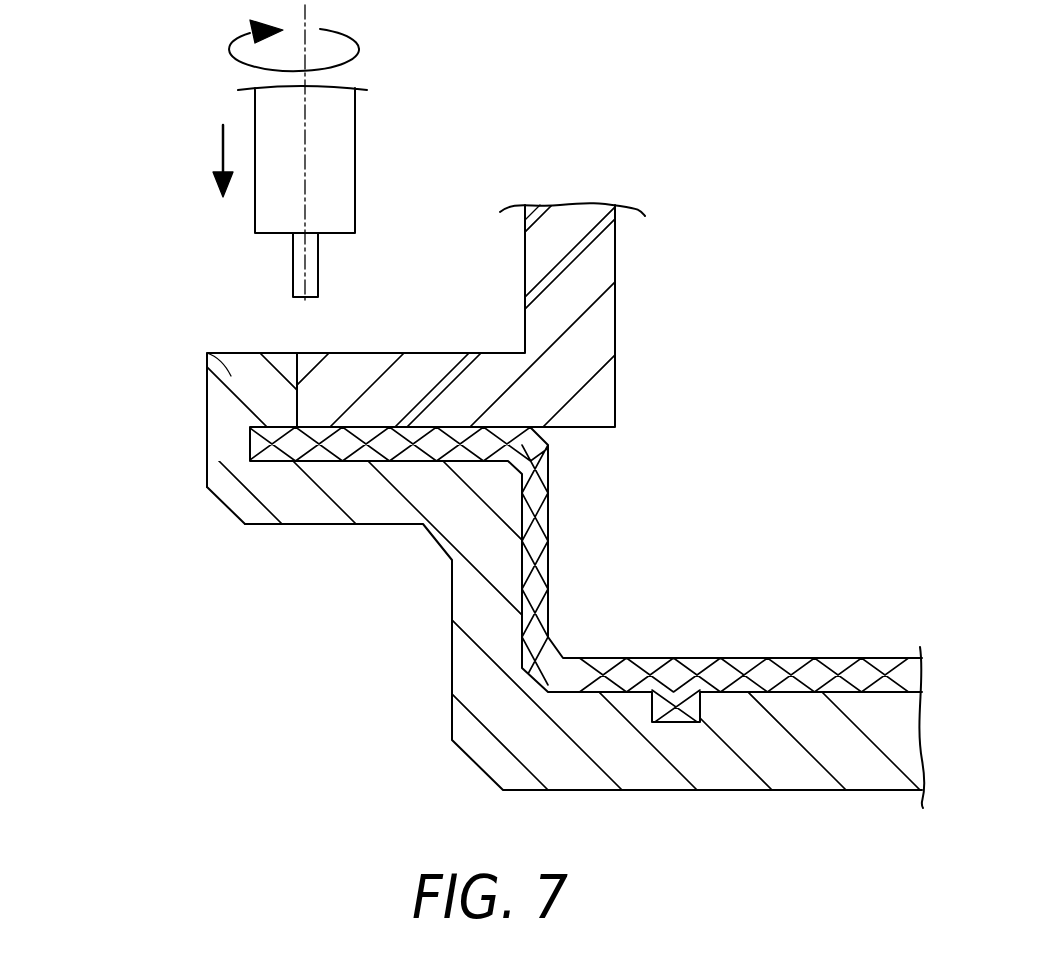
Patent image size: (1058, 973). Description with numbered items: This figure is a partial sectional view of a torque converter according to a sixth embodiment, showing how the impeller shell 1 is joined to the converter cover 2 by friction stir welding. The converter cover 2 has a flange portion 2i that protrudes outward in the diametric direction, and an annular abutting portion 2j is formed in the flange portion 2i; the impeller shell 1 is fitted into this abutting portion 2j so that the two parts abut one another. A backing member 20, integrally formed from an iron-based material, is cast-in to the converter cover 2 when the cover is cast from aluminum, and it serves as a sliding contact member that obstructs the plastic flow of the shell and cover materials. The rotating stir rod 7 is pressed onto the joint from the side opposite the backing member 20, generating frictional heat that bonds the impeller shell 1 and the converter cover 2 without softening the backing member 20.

The stir rod 7 is at (343, 184).
The impeller shell 1 is at (577, 346).
The converter cover 2 is at (303, 528).
The abutting portion 2j is at (207, 353).
The flange portion 2i is at (228, 502).
The backing member 20 is at (538, 488).